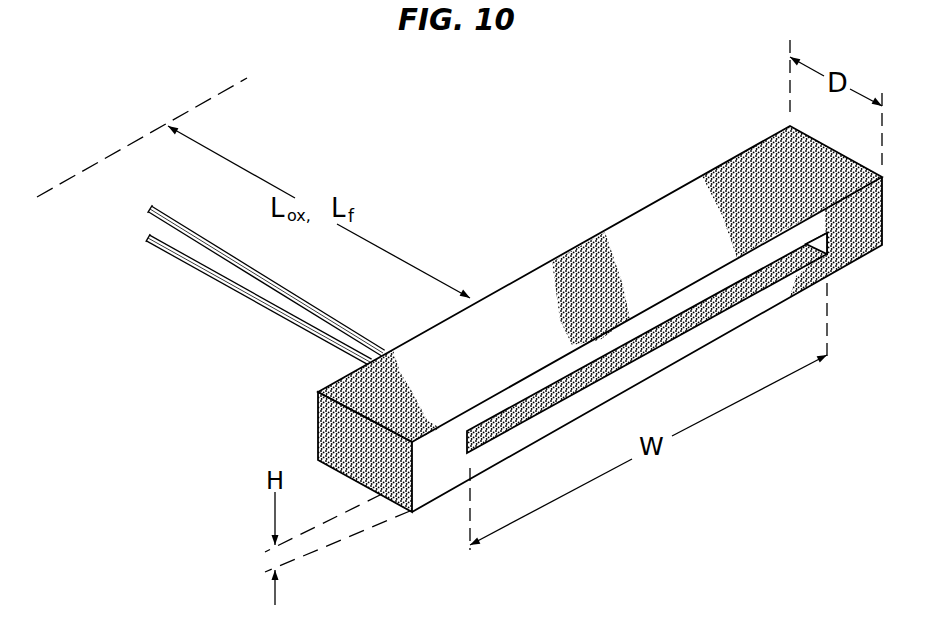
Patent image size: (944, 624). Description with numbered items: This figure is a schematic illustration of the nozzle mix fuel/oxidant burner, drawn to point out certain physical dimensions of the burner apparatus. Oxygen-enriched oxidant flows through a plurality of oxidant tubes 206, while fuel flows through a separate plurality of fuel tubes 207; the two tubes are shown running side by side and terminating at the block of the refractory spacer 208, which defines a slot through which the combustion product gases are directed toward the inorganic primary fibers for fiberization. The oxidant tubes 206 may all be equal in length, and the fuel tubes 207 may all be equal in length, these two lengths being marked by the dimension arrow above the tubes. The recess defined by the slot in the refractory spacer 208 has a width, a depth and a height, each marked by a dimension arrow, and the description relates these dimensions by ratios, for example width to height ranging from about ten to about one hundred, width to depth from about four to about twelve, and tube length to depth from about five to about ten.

The oxidant tubes 206 is at (237, 265).
The fuel tubes 207 is at (268, 305).
The refractory spacer 208 is at (569, 263).